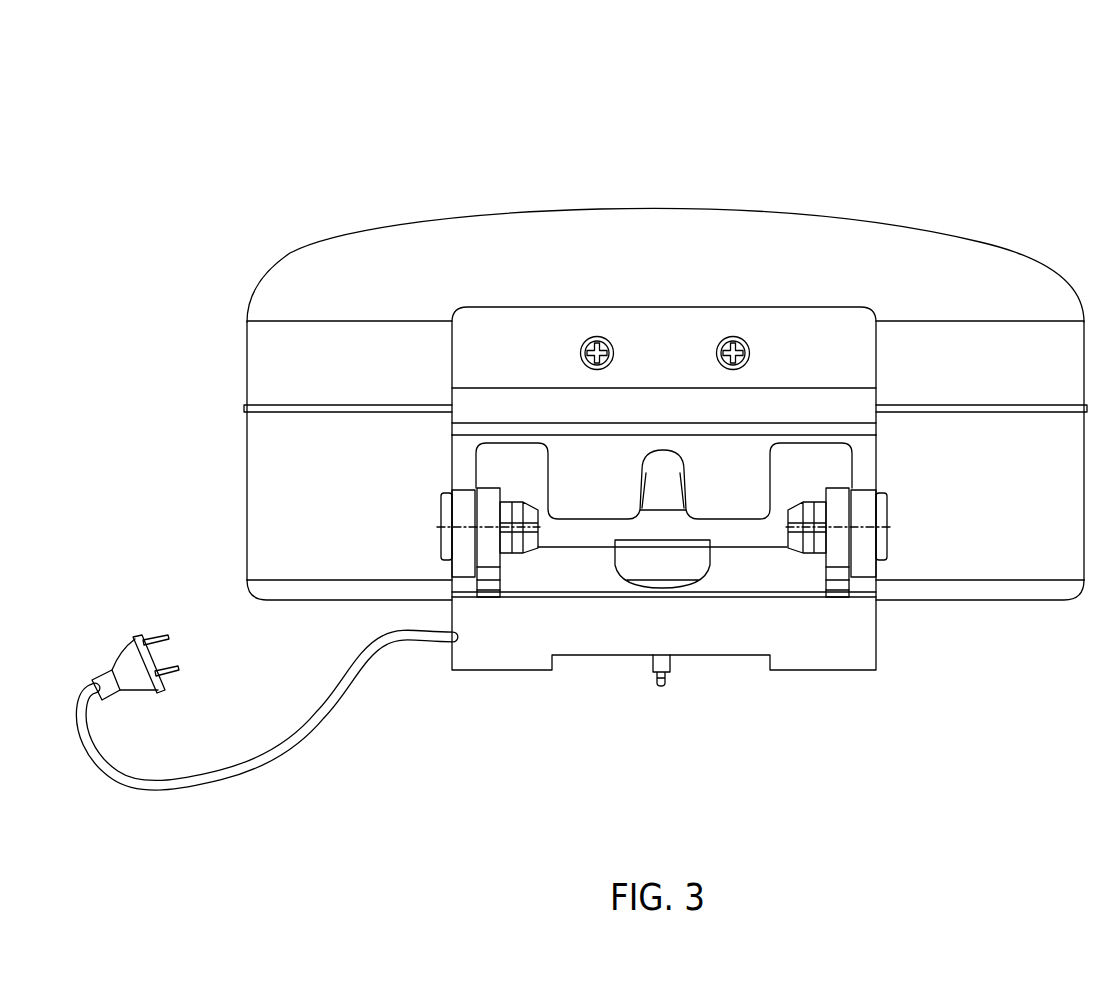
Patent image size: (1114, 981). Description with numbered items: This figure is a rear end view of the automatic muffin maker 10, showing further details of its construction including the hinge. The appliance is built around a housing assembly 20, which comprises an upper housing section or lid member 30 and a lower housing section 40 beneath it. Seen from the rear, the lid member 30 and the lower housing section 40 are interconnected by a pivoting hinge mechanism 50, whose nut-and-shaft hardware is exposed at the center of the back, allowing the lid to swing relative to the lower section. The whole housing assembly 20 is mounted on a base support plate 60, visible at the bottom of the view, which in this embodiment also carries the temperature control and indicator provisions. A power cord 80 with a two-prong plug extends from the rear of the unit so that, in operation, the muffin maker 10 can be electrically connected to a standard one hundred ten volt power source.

The automatic muffin maker 10 is at (645, 105).
The housing assembly 20 is at (207, 388).
The lid member 30 is at (682, 277).
The lower housing section 40 is at (370, 497).
The pivoting hinge mechanism 50 is at (913, 522).
The base support plate 60 is at (707, 692).
The power cord 80 is at (242, 775).